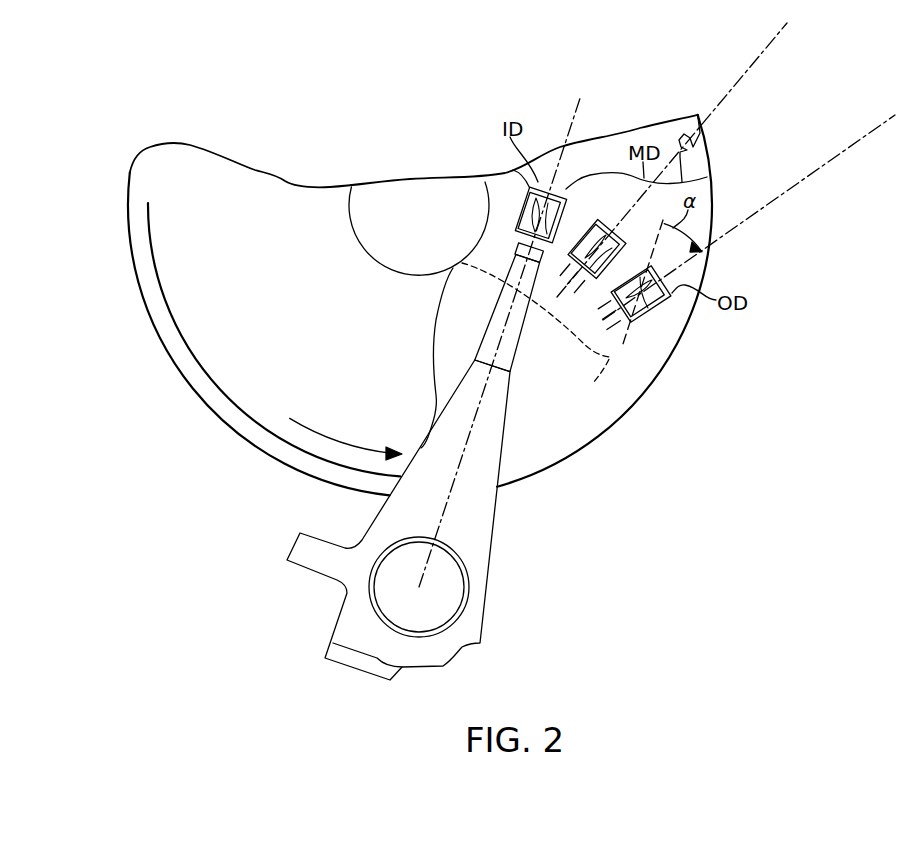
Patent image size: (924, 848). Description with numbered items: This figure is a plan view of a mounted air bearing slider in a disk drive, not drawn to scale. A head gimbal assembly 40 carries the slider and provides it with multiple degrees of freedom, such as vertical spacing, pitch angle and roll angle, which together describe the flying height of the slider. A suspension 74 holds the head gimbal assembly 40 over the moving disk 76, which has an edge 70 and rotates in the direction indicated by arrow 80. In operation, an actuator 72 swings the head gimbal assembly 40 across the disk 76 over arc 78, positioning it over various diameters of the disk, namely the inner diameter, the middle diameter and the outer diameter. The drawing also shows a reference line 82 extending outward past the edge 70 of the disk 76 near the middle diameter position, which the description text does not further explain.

The head gimbal assembly 40 is at (564, 188).
The edge 70 is at (247, 443).
The actuator 72 is at (487, 587).
The suspension 74 is at (520, 342).
The disk 76 is at (290, 308).
The arc 78 is at (595, 380).
The arrow 80 is at (335, 437).
The reference line 82 is at (760, 56).